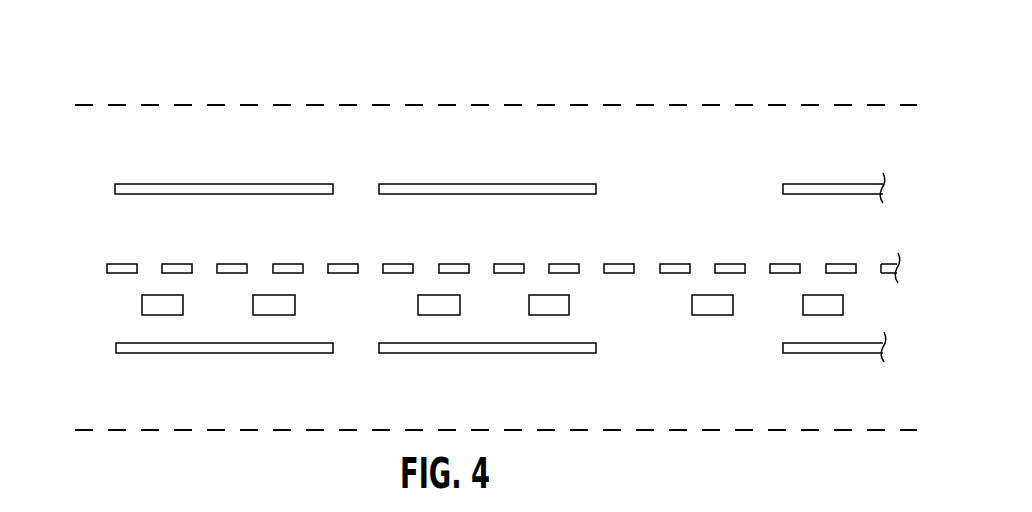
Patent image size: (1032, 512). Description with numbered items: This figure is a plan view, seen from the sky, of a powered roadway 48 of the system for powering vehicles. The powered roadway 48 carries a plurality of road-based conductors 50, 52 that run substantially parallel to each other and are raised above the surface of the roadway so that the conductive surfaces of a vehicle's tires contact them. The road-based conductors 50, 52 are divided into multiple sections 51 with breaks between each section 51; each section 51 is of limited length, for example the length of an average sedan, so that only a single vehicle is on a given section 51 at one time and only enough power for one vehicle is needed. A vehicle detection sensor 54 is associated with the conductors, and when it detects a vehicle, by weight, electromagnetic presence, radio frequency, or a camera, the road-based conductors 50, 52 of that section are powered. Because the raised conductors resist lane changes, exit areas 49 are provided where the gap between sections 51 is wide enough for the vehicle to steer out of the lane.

The powered roadway 48 is at (235, 146).
The exit area 49 is at (693, 202).
The road-based conductor 50 is at (305, 184).
The section 51 is at (142, 133).
The road-based conductor 52 is at (290, 353).
The vehicle detection sensor 54 is at (142, 300).